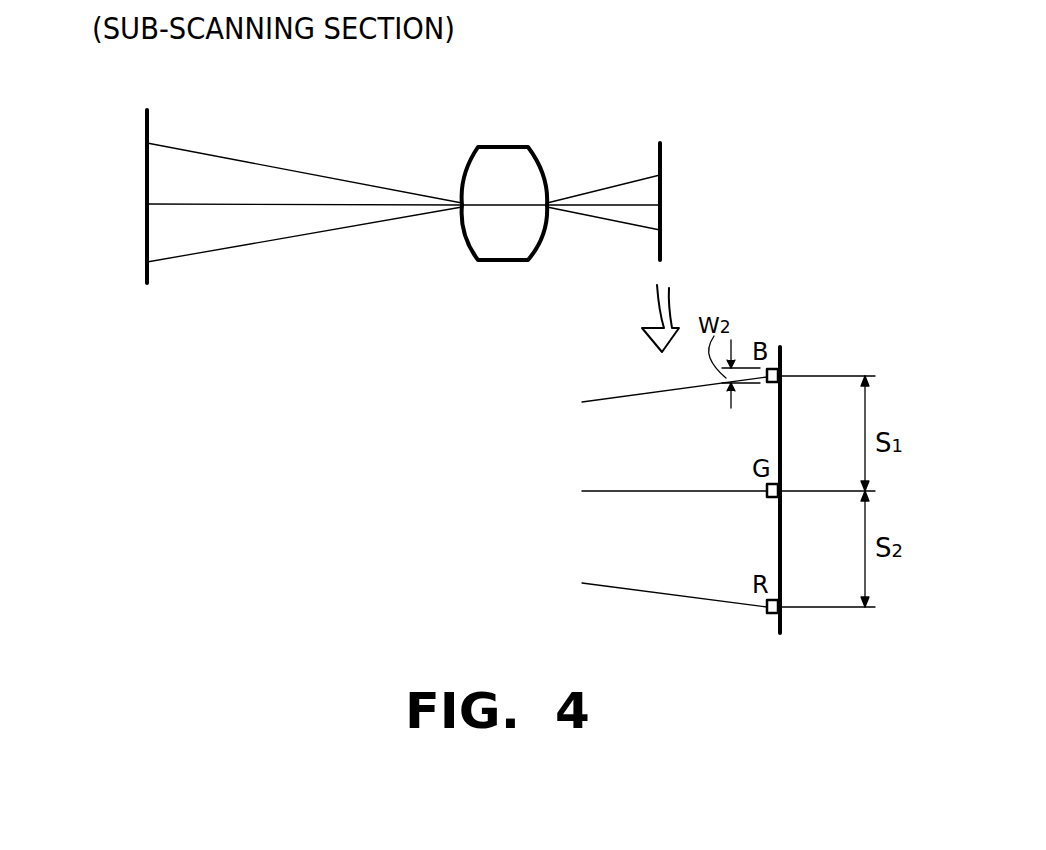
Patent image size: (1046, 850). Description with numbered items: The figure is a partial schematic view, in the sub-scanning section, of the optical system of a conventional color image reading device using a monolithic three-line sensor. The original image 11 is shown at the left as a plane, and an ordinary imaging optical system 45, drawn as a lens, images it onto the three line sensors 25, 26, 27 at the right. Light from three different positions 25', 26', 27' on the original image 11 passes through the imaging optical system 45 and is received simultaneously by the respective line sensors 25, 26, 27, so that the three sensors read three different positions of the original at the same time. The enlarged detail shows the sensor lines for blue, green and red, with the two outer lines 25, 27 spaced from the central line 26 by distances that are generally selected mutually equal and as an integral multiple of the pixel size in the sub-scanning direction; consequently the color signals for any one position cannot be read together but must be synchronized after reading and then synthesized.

The original image 11 is at (152, 130).
The position on the original image 27' is at (264, 161).
The position on the original image 26' is at (264, 200).
The position on the original image 25' is at (266, 243).
The imaging optical system 45 is at (507, 160).
The line sensor 25 is at (644, 170).
The central line sensor 26 is at (644, 201).
The line sensor 27 is at (644, 245).